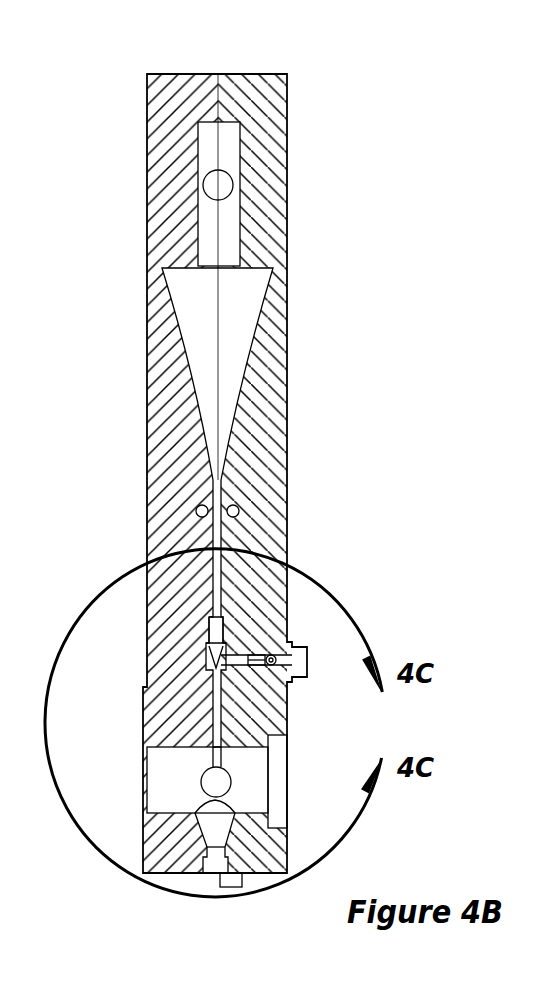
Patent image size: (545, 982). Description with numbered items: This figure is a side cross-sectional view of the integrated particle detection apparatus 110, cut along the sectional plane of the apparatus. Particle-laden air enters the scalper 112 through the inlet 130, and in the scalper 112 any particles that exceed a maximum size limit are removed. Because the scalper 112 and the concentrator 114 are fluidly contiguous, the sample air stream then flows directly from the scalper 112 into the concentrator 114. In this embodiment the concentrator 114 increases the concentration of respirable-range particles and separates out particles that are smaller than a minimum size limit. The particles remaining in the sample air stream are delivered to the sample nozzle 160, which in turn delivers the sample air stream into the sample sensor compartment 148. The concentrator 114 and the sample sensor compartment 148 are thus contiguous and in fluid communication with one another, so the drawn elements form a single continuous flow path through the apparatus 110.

The particle detection apparatus 110 is at (376, 144).
The scalper 112 is at (224, 214).
The concentrator 114 is at (228, 374).
The inlet 130 is at (213, 185).
The sample sensor compartment 148 is at (165, 768).
The sample nozzle 160 is at (212, 687).